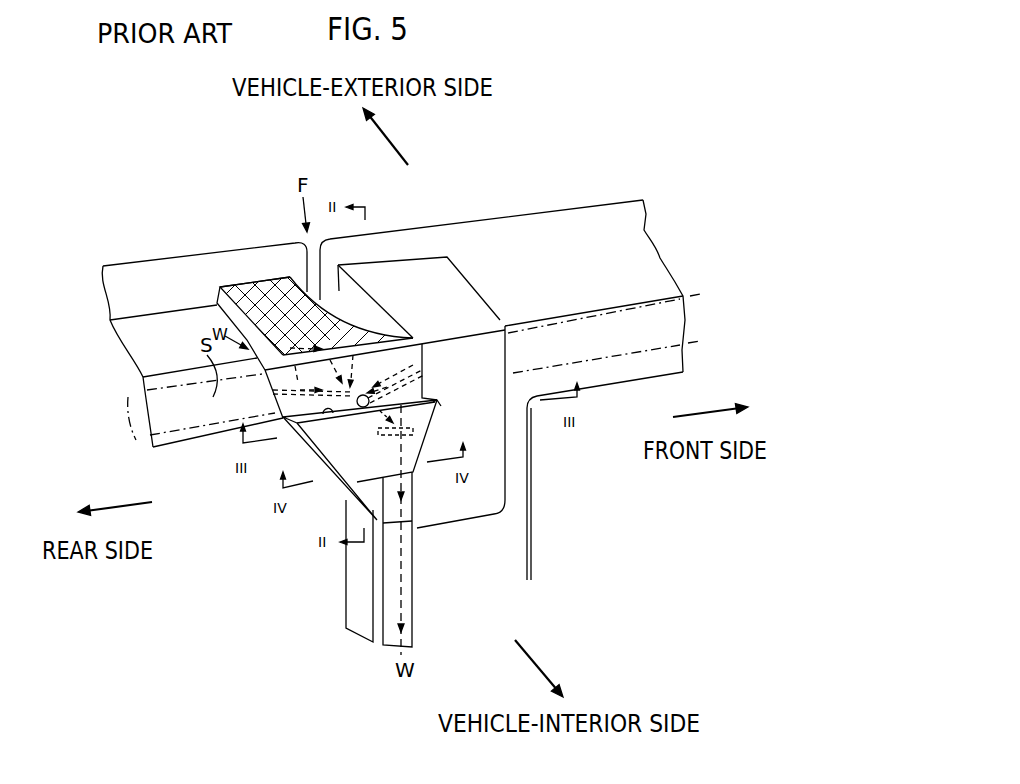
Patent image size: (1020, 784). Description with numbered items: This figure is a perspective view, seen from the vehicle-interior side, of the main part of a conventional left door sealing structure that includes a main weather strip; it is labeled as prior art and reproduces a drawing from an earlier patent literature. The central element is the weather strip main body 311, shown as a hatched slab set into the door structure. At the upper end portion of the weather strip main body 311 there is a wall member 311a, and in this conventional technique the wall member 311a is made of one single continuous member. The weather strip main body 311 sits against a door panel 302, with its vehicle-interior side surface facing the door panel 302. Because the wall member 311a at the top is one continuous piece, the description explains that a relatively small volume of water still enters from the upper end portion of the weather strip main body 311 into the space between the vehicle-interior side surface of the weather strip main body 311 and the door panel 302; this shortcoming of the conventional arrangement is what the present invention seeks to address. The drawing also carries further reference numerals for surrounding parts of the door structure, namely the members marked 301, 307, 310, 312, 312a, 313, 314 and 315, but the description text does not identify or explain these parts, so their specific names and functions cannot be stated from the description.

The roof side rail (front side) 301 is at (532, 228).
The door panel 302 is at (199, 262).
The hidden member 307 is at (130, 397).
The panel 310 is at (272, 268).
The weather strip main body 311 is at (258, 297).
The wall member 311a is at (268, 305).
The bracket block 312 is at (424, 370).
The curved edge of bracket 312a is at (366, 376).
The gusset plate 313 is at (335, 413).
The slit 314 is at (345, 387).
The hidden fastener 315 is at (413, 432).